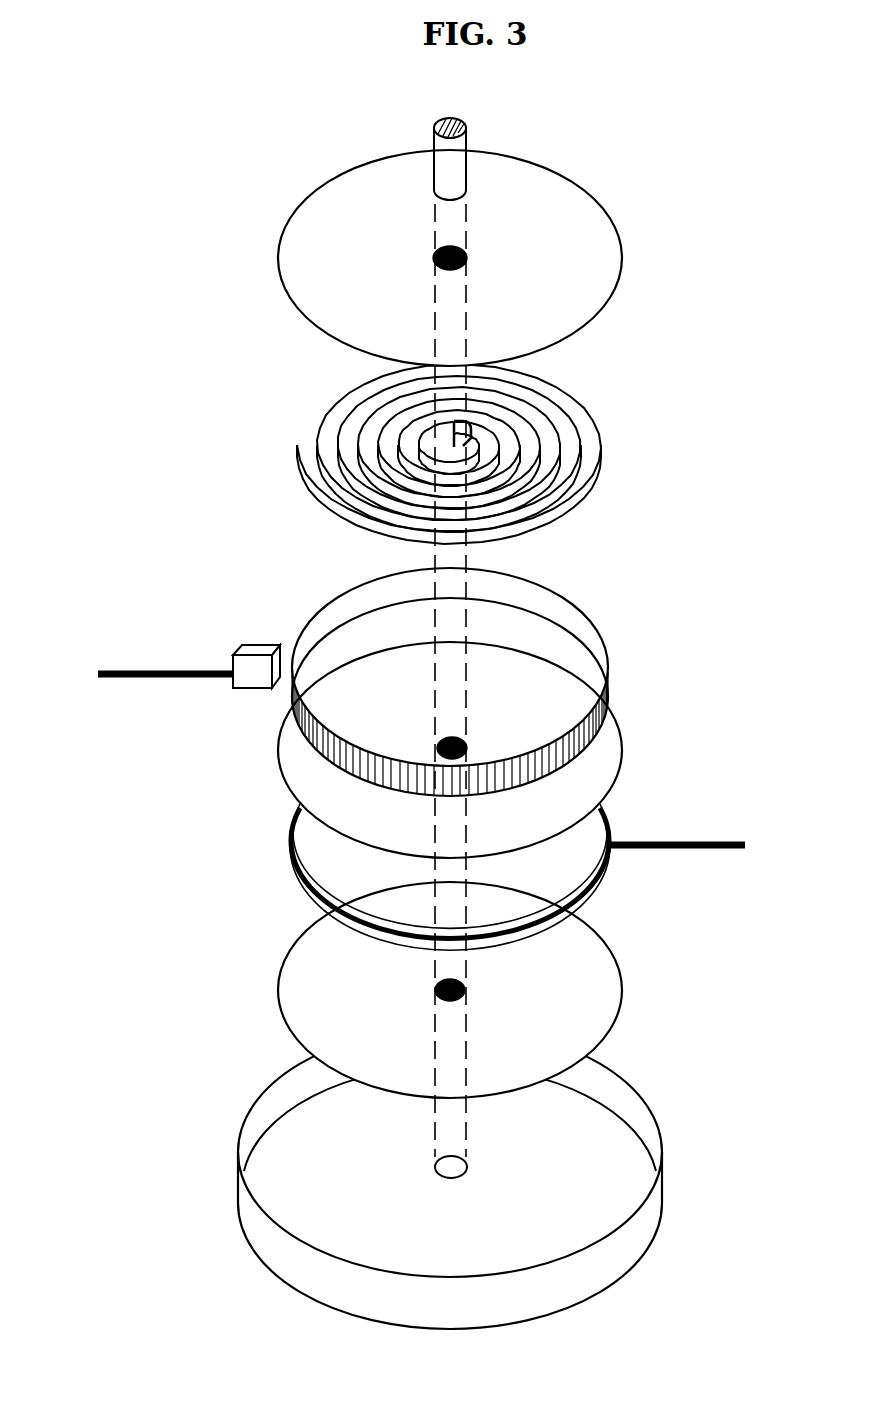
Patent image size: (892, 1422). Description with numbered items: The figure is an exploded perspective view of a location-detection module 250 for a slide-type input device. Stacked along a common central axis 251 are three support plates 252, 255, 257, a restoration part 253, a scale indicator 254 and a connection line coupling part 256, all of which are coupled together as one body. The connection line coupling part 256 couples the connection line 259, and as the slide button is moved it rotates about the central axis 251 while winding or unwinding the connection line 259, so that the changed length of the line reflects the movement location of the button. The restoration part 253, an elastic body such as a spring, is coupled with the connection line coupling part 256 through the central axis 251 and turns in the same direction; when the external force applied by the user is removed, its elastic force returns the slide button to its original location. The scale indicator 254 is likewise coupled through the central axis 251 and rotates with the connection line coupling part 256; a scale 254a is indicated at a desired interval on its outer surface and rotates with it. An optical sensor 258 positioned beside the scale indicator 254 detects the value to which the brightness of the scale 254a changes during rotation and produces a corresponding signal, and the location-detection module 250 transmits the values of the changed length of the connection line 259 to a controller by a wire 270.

The location-detection module 250 is at (635, 1150).
The central axis 251 is at (467, 162).
The support plate 252 is at (607, 248).
The restoration part 253 is at (600, 455).
The scale indicator 254 is at (441, 690).
The scale 254a is at (313, 748).
The support plate 255 is at (607, 778).
The connection line coupling part 256 is at (292, 867).
The support plate 257 is at (618, 985).
The optical sensor 258 is at (253, 645).
The connection line 259 is at (658, 850).
The wire 270 is at (162, 678).